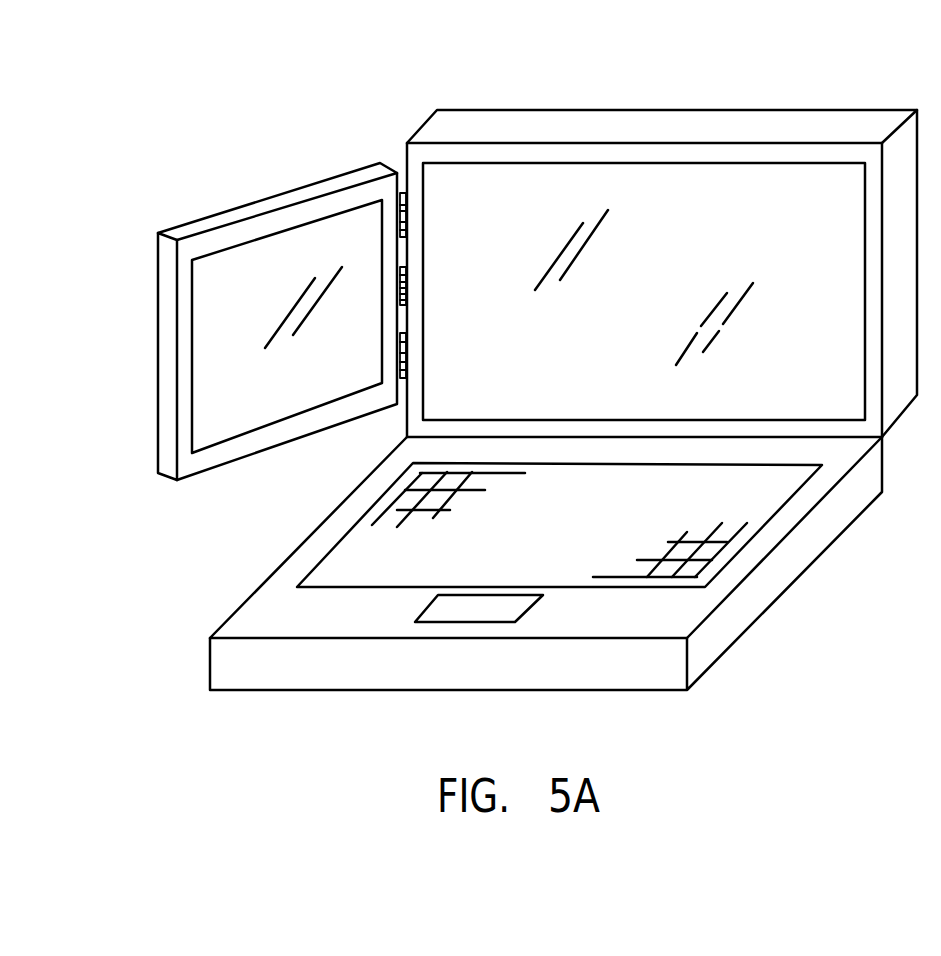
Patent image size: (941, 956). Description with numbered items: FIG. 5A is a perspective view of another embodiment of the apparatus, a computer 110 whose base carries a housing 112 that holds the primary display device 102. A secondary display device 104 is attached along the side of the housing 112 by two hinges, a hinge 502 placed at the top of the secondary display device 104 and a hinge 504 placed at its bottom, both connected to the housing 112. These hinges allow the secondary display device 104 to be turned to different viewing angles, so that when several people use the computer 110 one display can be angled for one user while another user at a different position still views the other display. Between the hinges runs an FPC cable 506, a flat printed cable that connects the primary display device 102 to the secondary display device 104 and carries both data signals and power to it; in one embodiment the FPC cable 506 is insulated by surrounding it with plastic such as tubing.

The primary display device 102 is at (827, 390).
The secondary display device 104 is at (215, 218).
The computer 110 is at (807, 540).
The housing 112 is at (752, 127).
The hinge 502 is at (405, 215).
The hinge 504 is at (405, 362).
The FPC cable 506 is at (405, 287).